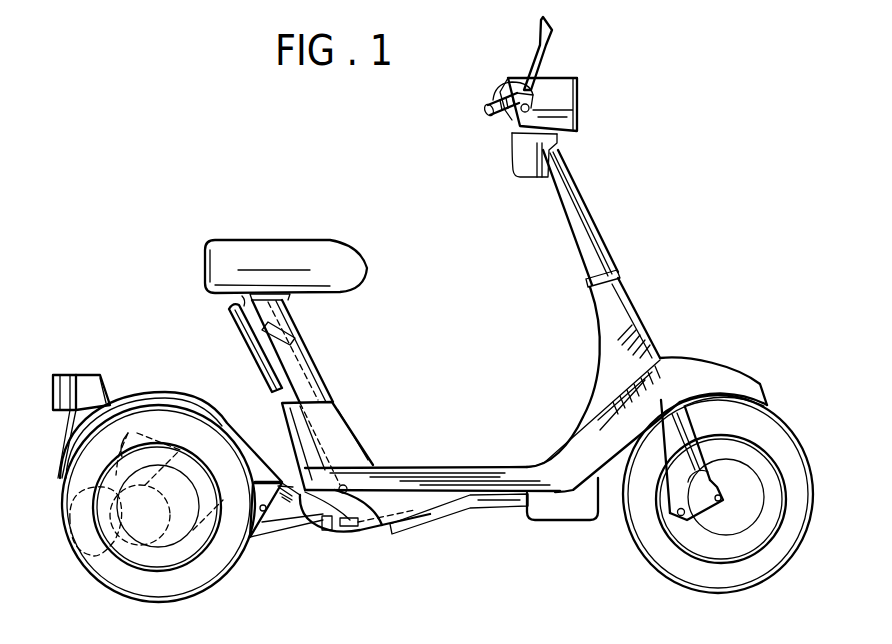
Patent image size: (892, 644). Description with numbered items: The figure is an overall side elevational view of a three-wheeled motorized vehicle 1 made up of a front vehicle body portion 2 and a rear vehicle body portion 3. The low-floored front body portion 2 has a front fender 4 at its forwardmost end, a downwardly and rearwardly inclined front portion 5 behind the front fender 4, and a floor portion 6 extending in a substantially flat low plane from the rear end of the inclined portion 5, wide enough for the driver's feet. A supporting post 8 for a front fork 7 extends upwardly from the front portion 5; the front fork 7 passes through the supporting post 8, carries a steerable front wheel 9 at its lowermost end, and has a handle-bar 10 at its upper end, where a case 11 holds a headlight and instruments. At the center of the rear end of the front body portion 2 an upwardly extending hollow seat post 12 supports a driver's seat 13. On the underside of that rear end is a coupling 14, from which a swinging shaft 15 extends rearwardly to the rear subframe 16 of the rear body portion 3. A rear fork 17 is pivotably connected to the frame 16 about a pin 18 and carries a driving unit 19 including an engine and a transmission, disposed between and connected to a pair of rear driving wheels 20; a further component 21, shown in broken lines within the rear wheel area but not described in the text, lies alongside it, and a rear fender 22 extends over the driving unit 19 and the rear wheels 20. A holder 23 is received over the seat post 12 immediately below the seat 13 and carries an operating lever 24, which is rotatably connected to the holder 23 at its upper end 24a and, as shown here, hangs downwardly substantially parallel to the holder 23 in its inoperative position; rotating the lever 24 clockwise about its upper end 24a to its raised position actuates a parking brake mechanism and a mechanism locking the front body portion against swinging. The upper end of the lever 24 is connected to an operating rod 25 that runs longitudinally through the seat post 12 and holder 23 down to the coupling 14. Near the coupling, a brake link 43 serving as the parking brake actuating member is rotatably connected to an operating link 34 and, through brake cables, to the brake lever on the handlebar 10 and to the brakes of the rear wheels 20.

The three-wheeled motorized vehicle 1 is at (640, 275).
The front vehicle body portion 2 is at (529, 435).
The rear vehicle body portion 3 is at (153, 338).
The front fender 4 is at (712, 373).
The inclined front portion 5 is at (610, 417).
The floor portion 6 is at (437, 467).
The front fork 7 is at (684, 395).
The supporting post 8 is at (632, 340).
The front wheel 9 is at (778, 428).
The handle-bar 10 is at (490, 112).
The case 11 is at (562, 90).
The seat post 12 is at (303, 352).
The driver's seat 13 is at (280, 252).
The coupling 14 is at (378, 520).
The swinging shaft 15 is at (318, 528).
The rear subframe 16 is at (297, 535).
The rear fork 17 is at (252, 490).
The pin 18 is at (263, 512).
The driving unit 19 is at (128, 433).
The rear driving wheels 20 is at (173, 588).
The hub motor 21 is at (92, 550).
The rear fender 22 is at (65, 440).
The holder 23 is at (287, 302).
The operating lever 24 is at (252, 370).
The upper end of operating lever 24a is at (242, 300).
The operating rod 25 is at (303, 383).
The operating link 34 is at (350, 488).
The brake link 43 is at (350, 520).